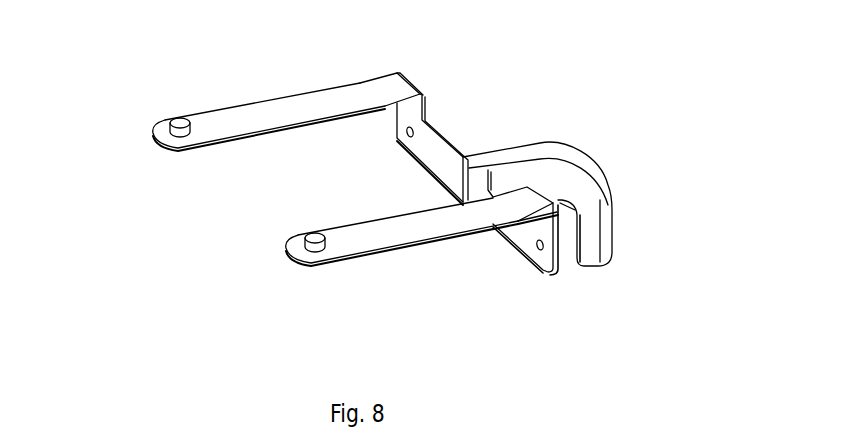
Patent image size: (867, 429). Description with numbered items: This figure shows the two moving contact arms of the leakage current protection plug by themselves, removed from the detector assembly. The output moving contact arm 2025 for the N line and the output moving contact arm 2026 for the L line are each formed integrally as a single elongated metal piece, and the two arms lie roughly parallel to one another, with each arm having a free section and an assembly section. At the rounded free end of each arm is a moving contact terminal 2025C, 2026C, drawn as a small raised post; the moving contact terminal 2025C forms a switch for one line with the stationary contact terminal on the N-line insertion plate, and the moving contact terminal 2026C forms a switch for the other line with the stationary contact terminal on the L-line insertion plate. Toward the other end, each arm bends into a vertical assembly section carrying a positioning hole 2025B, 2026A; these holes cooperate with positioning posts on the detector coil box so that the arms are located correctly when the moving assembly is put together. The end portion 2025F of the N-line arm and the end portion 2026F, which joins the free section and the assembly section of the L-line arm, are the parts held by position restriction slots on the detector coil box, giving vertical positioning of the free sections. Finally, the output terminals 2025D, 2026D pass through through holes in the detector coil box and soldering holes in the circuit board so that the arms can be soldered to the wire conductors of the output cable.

The output moving contact arm for the N line 2025 is at (290, 105).
The positioning hole 2025B is at (403, 143).
The moving contact terminal 2025C is at (190, 150).
The output terminal 2025D is at (566, 250).
The end portion 2025F is at (383, 78).
The output moving contact arm for the L line 2026 is at (447, 237).
The positioning hole 2026A is at (538, 252).
The moving contact terminal 2026C is at (313, 263).
The output terminal 2026D is at (593, 252).
The end portion 2026F is at (523, 203).